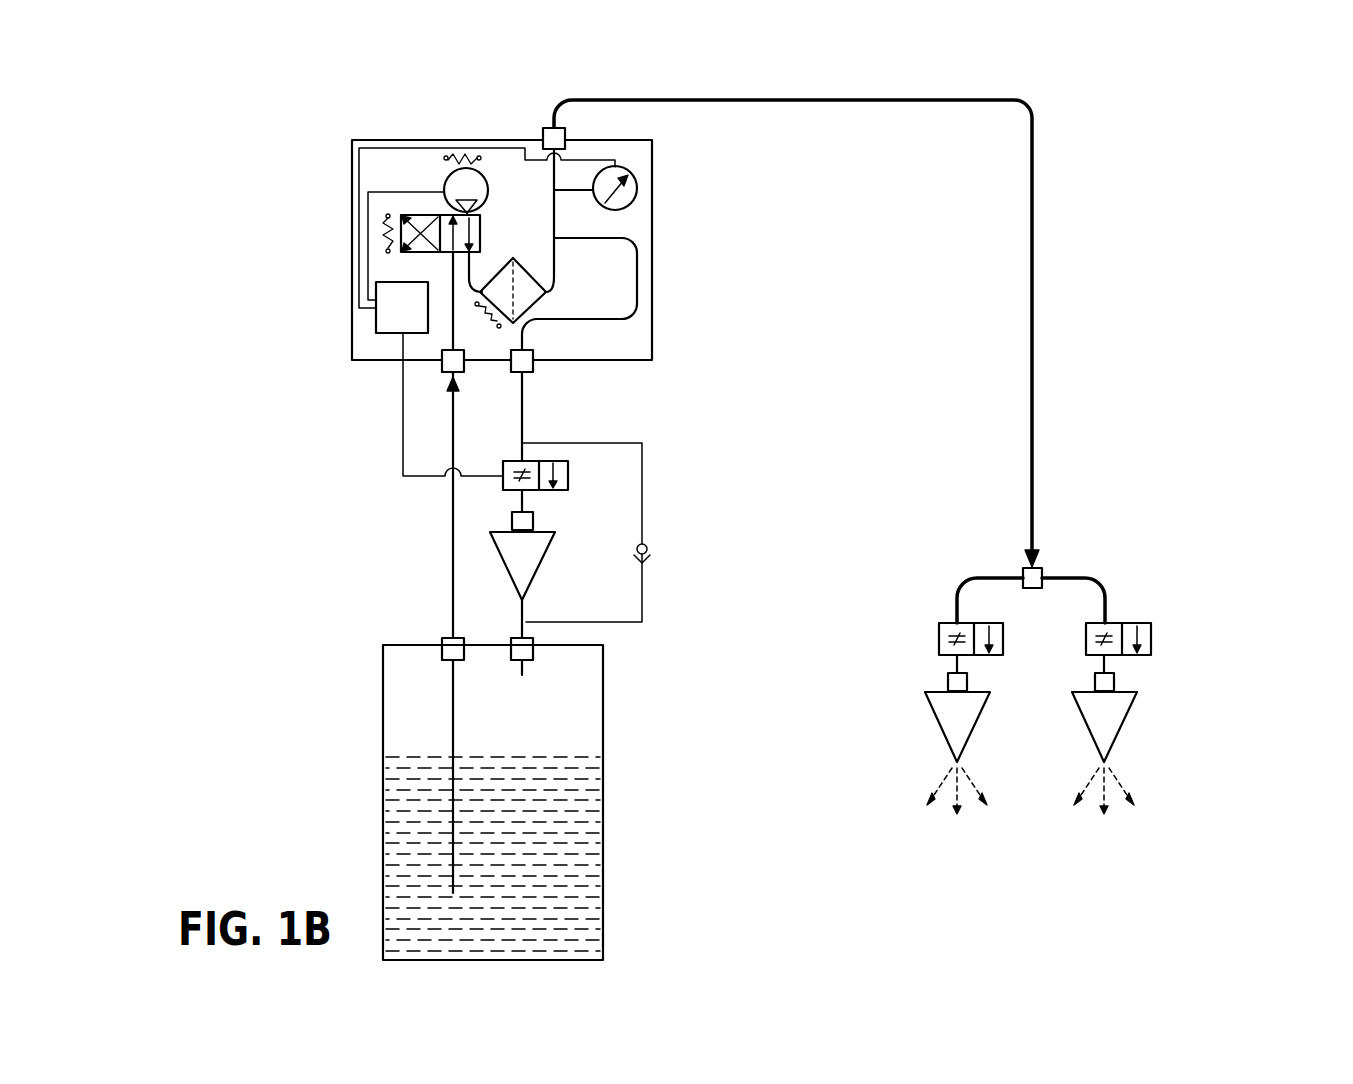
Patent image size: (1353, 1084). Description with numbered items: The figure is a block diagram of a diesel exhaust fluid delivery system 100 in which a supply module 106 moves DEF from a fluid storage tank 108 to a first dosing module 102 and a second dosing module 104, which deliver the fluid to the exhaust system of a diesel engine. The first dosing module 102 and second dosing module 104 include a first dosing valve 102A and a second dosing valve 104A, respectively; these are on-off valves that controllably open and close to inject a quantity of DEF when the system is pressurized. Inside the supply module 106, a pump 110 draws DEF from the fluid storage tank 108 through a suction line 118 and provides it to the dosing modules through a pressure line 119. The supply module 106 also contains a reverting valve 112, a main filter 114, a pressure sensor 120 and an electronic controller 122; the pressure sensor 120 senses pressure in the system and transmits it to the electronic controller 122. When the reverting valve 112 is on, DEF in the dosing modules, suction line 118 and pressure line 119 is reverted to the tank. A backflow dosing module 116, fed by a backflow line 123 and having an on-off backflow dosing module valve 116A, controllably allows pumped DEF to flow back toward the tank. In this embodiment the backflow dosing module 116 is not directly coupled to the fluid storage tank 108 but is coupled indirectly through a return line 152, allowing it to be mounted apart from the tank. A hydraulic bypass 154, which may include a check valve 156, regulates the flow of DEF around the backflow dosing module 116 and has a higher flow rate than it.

The DEF delivery system 100 is at (1180, 175).
The first dosing module 102 is at (1180, 669).
The first dosing valve 102A is at (1151, 634).
The second dosing module 104 is at (895, 667).
The second dosing valve 104A is at (939, 634).
The supply module 106 is at (352, 140).
The fluid storage tank 108 is at (383, 692).
The pump 110 is at (446, 180).
The reverting valve 112 is at (412, 253).
The main filter 114 is at (535, 300).
The backflow dosing module 116 is at (590, 508).
The backflow dosing module valve 116A is at (568, 471).
The suction line 118 is at (453, 398).
The pressure line 119 is at (718, 100).
The pressure sensor 120 is at (633, 200).
The electronic controller 122 is at (376, 323).
The backflow line 123 is at (522, 425).
The return line 152 is at (522, 619).
The hydraulic bypass 154 is at (642, 598).
The check valve 156 is at (637, 550).